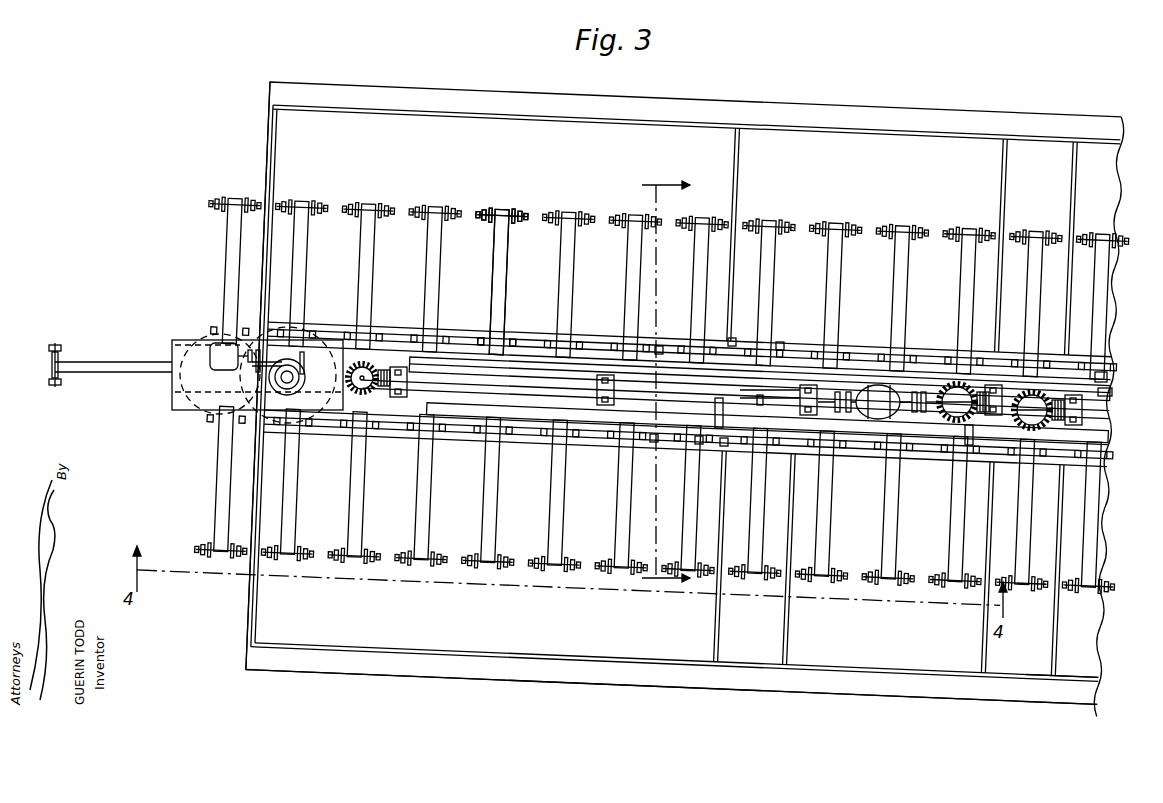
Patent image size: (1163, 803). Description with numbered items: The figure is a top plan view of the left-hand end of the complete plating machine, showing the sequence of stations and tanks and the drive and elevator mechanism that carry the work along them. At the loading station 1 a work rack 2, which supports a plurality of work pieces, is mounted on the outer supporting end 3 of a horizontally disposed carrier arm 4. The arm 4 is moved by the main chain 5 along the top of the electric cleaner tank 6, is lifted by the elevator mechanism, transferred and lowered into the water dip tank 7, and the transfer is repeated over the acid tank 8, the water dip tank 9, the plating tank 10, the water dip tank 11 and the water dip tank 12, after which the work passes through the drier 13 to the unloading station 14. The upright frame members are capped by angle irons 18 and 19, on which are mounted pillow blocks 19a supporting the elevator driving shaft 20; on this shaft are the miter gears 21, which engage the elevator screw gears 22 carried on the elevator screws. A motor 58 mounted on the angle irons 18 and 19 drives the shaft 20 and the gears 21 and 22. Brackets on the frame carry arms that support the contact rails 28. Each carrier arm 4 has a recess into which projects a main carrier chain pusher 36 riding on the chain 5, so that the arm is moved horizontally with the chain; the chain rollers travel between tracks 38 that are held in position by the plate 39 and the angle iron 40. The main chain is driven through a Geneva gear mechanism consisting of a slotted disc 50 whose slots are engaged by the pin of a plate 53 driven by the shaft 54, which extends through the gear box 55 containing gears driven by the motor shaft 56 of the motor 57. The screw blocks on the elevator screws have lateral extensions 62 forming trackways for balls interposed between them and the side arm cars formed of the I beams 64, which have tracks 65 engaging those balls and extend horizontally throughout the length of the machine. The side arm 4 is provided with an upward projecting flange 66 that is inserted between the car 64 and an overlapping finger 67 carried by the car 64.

The loading station 1 is at (170, 445).
The work rack 2 is at (512, 212).
The outer supporting end 3 is at (494, 215).
The carrier arm 4 is at (122, 370).
The main chain 5 is at (594, 345).
The electric cleaner tank 6 is at (470, 640).
The water dip tank 7 is at (750, 645).
The acid tank 8 is at (900, 650).
The water dip tank 9 is at (1020, 655).
The plating tank 10 is at (1098, 145).
The water dip tank 11 is at (1035, 155).
The water dip tank 12 is at (882, 140).
The drier 13 is at (648, 138).
The unloading station 14 is at (190, 262).
The angle iron 18 is at (510, 440).
The angle iron 19 is at (520, 360).
The pillow block 19a is at (613, 400).
The elevator driving shaft 20 is at (740, 395).
The miter gear 21 is at (407, 392).
The elevator screw gear 22 is at (407, 372).
The contact rail 28 is at (1116, 359).
The main carrier chain pusher 36 is at (585, 325).
The track 38 is at (735, 345).
The plate 39 is at (782, 350).
The angle iron 40 is at (660, 355).
The slotted disc 50 is at (195, 412).
The plate 53 is at (290, 418).
The shaft 54 is at (303, 381).
The gear box 55 is at (300, 373).
The motor shaft 56 is at (263, 371).
The motor 57 is at (212, 342).
The motor 58 is at (880, 384).
The lateral extension 62 is at (398, 340).
The I beam 64 is at (582, 368).
The track 65 is at (448, 342).
The upward projecting flange 66 is at (691, 370).
The overlapping finger 67 is at (760, 398).